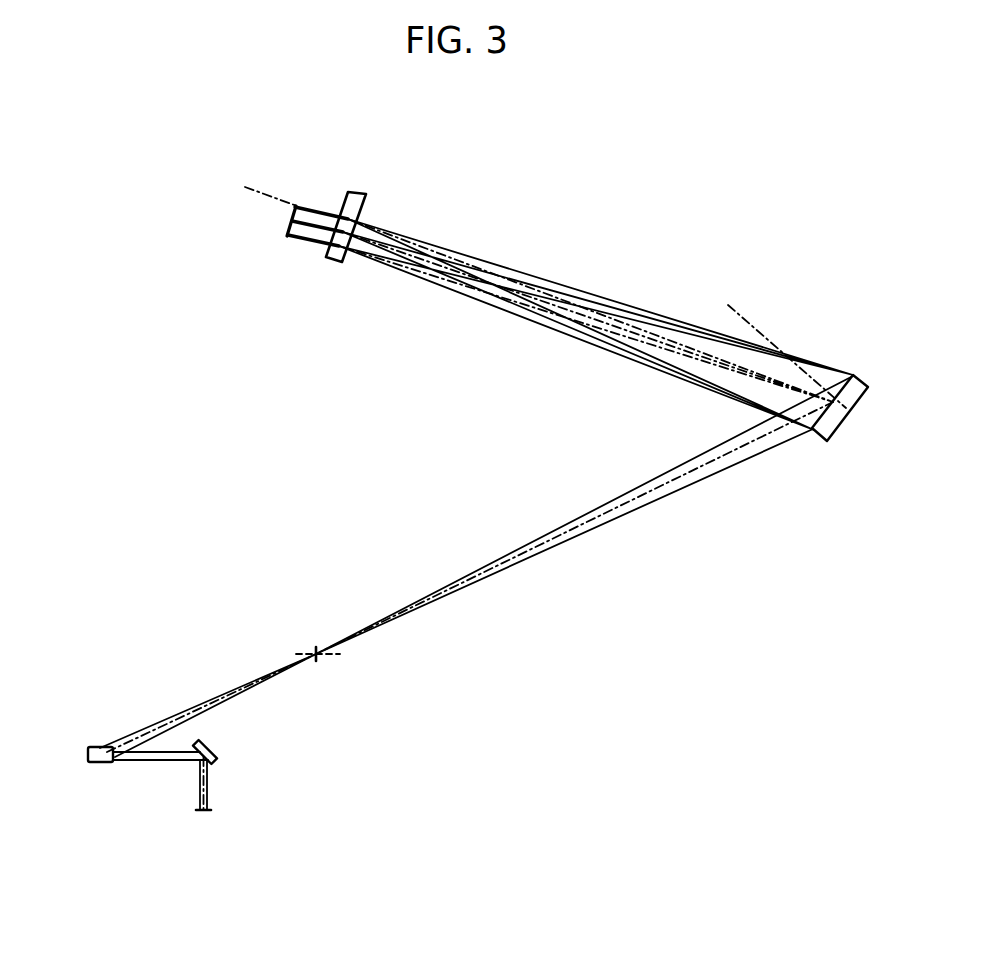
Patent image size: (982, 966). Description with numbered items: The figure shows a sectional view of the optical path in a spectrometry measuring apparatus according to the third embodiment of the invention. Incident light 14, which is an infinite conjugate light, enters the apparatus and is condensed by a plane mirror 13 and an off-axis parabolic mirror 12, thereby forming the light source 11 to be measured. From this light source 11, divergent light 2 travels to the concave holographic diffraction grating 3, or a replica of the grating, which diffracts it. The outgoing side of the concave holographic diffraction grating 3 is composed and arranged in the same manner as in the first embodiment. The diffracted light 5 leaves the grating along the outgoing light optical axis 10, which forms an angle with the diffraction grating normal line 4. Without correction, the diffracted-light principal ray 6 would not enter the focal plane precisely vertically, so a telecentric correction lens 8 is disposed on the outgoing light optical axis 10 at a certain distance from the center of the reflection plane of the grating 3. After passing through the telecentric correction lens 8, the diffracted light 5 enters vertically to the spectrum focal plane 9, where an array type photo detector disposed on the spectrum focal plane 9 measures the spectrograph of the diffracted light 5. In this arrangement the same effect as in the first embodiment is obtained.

The divergent light 2 is at (555, 530).
The concave holographic diffraction grating 3 is at (810, 432).
The diffraction grating normal line 4 is at (753, 327).
The diffracted light 5 is at (668, 367).
The diffracted-light principal ray 6 is at (600, 331).
The telecentric correction lens 8 is at (355, 213).
The spectrum focal plane 9 is at (305, 210).
The outgoing light optical axis 10 is at (282, 200).
The light source to be measured 11 is at (316, 654).
The off-axis parabolic mirror 12 is at (97, 748).
The plane mirror 13 is at (212, 750).
The incident light 14 is at (207, 800).